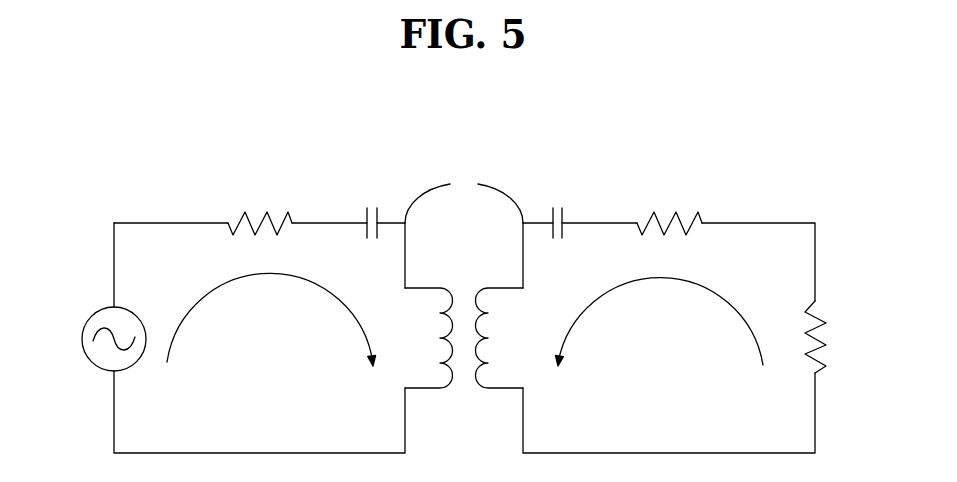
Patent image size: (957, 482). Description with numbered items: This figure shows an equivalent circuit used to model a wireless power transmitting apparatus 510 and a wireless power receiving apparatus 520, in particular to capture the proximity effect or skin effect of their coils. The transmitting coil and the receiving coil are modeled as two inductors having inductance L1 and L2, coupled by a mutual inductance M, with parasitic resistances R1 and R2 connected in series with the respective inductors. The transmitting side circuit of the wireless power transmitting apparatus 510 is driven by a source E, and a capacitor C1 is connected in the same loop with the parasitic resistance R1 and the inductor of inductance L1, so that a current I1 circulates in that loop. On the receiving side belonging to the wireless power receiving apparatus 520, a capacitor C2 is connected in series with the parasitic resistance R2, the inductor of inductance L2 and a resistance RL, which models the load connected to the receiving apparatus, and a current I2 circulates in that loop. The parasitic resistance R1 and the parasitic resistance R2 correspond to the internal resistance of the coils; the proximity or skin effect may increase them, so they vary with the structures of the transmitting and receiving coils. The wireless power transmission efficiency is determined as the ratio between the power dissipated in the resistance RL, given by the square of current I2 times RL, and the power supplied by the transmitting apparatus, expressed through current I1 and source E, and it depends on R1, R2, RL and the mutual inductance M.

The wireless power transmitting apparatus 510 is at (60, 150).
The wireless power receiving apparatus 520 is at (472, 150).
The source voltage E is at (103, 339).
The parasitic resistance R1 is at (260, 205).
The primary capacitor C1 is at (375, 206).
The inductance L1 is at (429, 338).
The mutual inductance M is at (464, 197).
The inductance L2 is at (500, 338).
The secondary capacitor C2 is at (556, 206).
The parasitic resistance R2 is at (669, 205).
The resistance RL is at (831, 337).
The current I1 is at (271, 319).
The current I2 is at (660, 322).